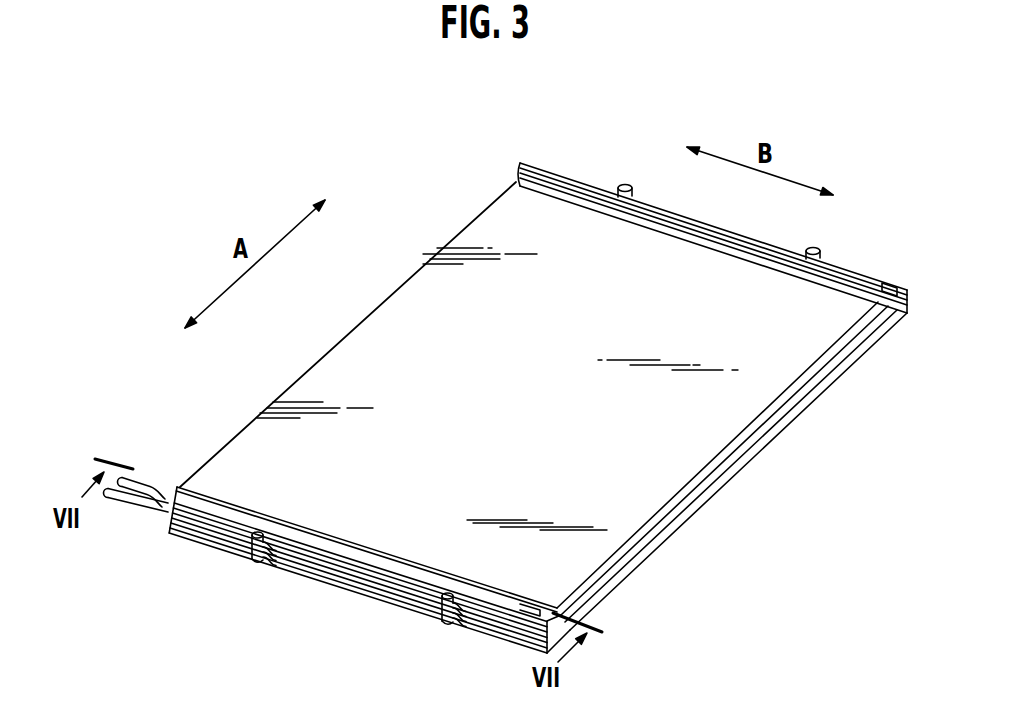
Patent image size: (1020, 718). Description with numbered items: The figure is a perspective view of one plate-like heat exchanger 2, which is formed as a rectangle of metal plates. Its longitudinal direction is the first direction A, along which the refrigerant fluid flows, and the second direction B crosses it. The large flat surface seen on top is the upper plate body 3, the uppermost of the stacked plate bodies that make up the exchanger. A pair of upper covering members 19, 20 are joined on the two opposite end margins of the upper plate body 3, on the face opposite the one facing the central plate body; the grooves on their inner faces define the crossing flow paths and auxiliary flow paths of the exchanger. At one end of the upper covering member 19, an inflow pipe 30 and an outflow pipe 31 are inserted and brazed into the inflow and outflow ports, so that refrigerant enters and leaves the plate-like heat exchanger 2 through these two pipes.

The plate-like heat exchanger 2 is at (737, 507).
The upper plate body 3 is at (478, 222).
The upper covering member 19 is at (345, 540).
The upper covering member 20 is at (662, 212).
The inflow pipe 30 is at (137, 477).
The outflow pipe 31 is at (138, 510).